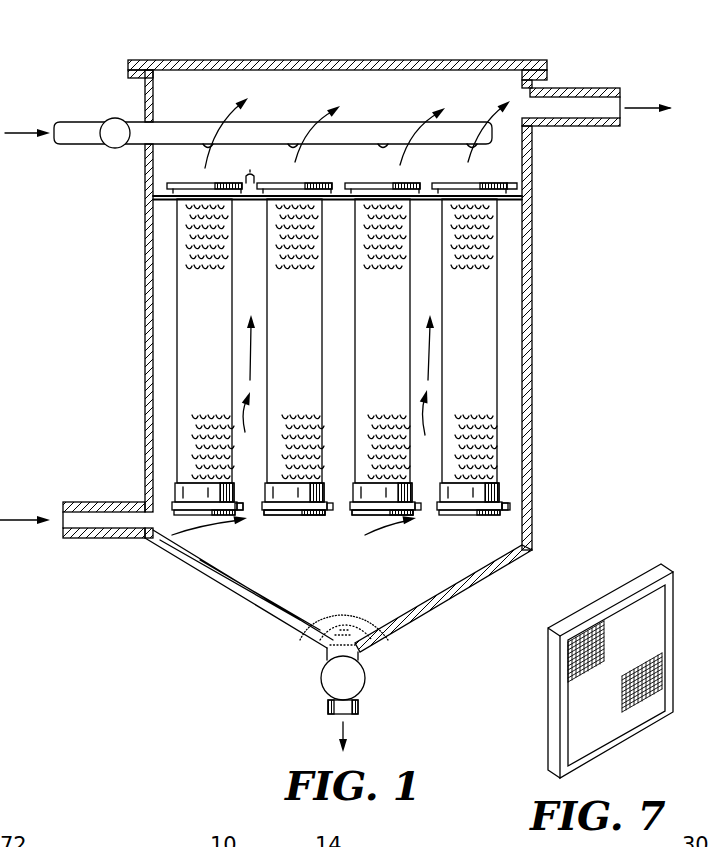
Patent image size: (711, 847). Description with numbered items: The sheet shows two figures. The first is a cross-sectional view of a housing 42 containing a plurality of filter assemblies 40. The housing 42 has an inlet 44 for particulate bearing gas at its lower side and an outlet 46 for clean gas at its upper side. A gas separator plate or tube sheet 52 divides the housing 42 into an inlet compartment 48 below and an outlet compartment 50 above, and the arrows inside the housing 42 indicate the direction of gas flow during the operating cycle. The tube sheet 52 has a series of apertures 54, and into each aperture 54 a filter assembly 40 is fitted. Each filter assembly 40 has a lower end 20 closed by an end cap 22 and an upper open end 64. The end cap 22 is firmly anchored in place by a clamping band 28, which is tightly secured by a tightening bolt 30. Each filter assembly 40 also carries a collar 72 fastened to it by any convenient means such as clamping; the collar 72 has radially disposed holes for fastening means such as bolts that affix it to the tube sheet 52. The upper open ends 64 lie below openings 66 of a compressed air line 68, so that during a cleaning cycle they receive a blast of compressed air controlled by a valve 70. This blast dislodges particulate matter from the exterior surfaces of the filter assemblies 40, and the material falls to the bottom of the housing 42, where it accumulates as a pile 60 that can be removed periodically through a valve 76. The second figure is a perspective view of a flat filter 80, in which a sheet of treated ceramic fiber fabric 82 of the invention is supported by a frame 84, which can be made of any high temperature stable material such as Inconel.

In FIG. 1, the lower end 20 is at (372, 530).
In FIG. 1, the end cap 22 is at (178, 490).
In FIG. 1, the clamping band 28 is at (322, 515).
In FIG. 1, the tightening bolt 30 is at (242, 503).
In FIG. 1, the filter assembly 40 is at (500, 352).
In FIG. 1, the housing 42 is at (532, 392).
In FIG. 1, the inlet 44 is at (98, 538).
In FIG. 1, the outlet 46 is at (591, 92).
In FIG. 1, the inlet compartment 48 is at (242, 580).
In FIG. 1, the outlet compartment 50 is at (322, 85).
In FIG. 1, the gas separator plate or tube sheet 52 is at (167, 187).
In FIG. 1, the aperture 54 is at (195, 207).
In FIG. 1, the pile 60 is at (318, 648).
In FIG. 1, the upper open end 64 is at (518, 183).
In FIG. 1, the opening 66 is at (383, 150).
In FIG. 1, the compressed air line 68 is at (70, 122).
In FIG. 1, the valve 70 is at (113, 118).
In FIG. 1, the collar 72 is at (252, 182).
In FIG. 1, the valve 76 is at (321, 684).
In FIG. 7, the flat filter 80 is at (623, 582).
In FIG. 7, the sheet of treated ceramic fiber fabric 82 is at (586, 630).
In FIG. 7, the frame 84 is at (549, 682).